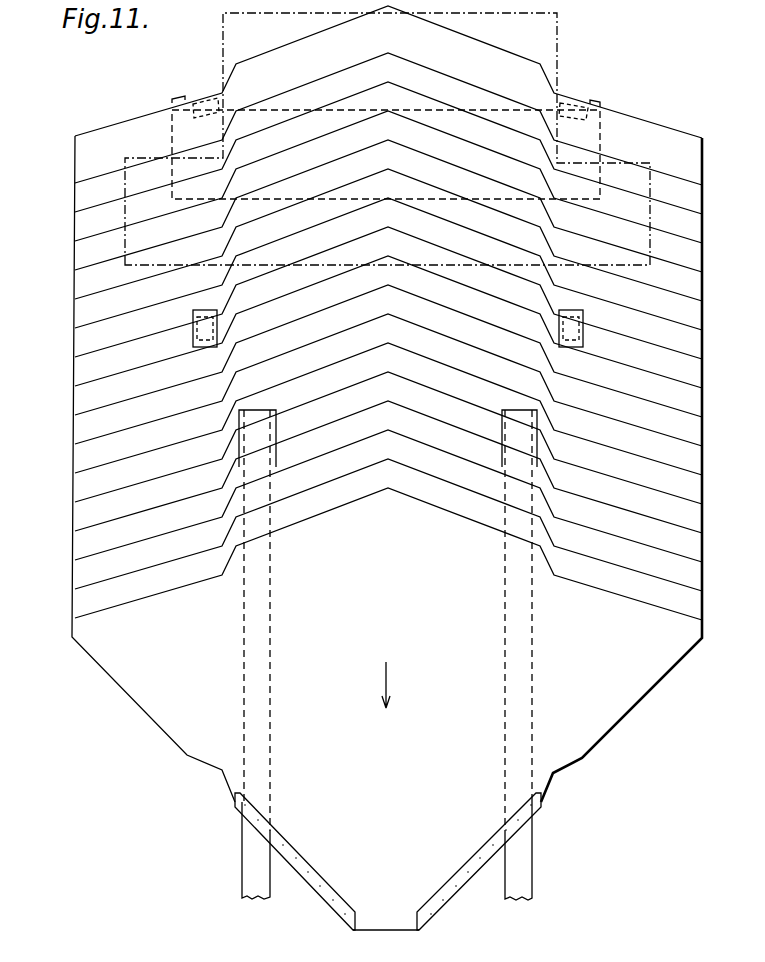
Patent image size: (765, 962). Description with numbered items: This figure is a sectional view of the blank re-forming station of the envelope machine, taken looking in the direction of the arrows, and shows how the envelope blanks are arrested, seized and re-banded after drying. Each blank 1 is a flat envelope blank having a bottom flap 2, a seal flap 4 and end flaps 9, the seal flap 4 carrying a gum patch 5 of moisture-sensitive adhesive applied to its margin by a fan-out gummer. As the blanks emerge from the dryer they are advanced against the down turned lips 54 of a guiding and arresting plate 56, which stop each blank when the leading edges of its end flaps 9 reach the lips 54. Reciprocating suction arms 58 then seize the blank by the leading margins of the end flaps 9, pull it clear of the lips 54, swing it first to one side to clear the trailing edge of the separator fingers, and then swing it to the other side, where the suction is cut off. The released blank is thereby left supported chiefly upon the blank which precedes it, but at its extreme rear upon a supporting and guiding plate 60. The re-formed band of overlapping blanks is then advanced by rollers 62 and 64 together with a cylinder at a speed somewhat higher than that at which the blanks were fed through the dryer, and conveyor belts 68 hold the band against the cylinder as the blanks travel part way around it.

The blank 1 is at (63, 263).
The bottom flap 2 is at (322, 863).
The seal flap 4 is at (488, 100).
The gum patch 5 is at (420, 910).
The end flaps 9 is at (80, 197).
The down turned lips 54 is at (175, 100).
The guiding and arresting plate 56 is at (600, 138).
The reciprocating suction arms 58 is at (205, 97).
The supporting and guiding plate 60 is at (233, 32).
The roller 62 is at (197, 337).
The roller 64 is at (193, 313).
The conveyor belts 68 is at (250, 863).